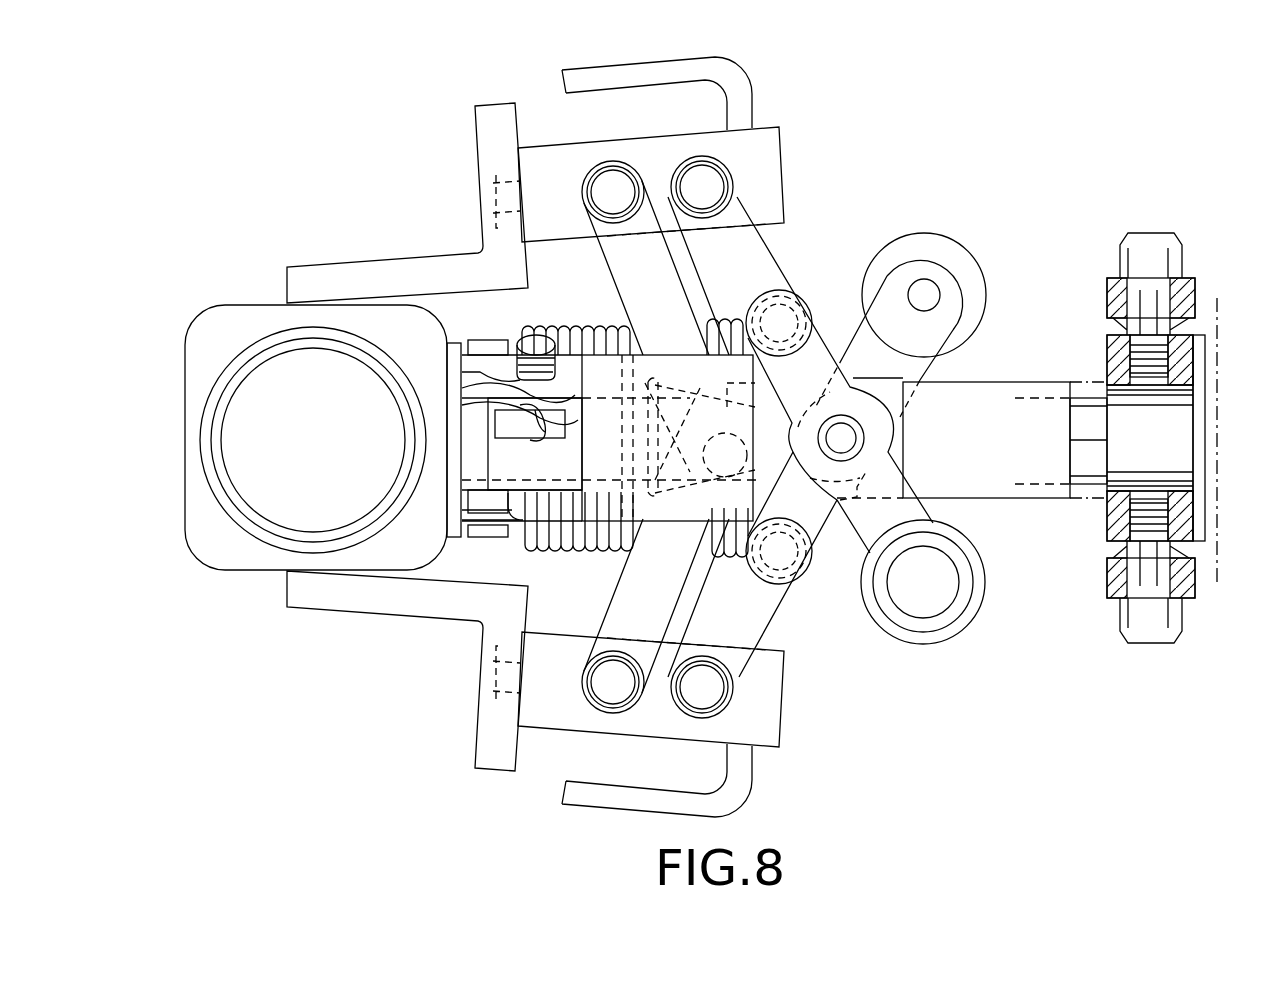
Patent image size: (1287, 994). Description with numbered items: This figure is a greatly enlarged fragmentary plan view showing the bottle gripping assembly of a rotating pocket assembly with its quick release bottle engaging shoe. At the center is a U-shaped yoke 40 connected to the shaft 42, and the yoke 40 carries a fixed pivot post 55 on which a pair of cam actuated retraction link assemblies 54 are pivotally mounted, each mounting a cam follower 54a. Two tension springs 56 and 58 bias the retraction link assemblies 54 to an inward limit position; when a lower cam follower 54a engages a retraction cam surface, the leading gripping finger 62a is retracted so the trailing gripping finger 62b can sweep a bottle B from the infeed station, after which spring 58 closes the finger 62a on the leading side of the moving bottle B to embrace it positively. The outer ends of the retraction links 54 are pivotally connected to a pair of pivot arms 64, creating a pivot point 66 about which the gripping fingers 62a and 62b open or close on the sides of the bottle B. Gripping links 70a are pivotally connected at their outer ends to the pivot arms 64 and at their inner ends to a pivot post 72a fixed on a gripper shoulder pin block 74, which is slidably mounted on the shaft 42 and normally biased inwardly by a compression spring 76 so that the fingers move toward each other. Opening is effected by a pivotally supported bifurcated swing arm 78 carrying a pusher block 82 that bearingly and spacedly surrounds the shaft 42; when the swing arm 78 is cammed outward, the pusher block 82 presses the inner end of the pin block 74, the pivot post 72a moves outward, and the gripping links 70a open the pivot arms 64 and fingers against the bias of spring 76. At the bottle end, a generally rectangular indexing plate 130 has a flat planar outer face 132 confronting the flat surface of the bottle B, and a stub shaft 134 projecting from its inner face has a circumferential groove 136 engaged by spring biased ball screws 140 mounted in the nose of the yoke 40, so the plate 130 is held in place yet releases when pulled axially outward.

The bottle B is at (232, 572).
The yoke 40 is at (688, 363).
The shaft 42 is at (1083, 470).
The retraction link assembly 54 is at (880, 310).
The cam follower 54a is at (967, 247).
The fixed pivot post 55 is at (852, 442).
The tension spring 56 is at (565, 322).
The tension spring 58 is at (577, 557).
The leading gripping finger 62a is at (493, 763).
The trailing gripping finger 62b is at (495, 105).
The pivot arm 64 is at (774, 153).
The pivot point 66 is at (703, 185).
The gripping link 70a is at (664, 282).
The upper pivot post 72a is at (665, 465).
The gripper shoulder pin block 74 is at (1000, 393).
The compression spring 76 is at (660, 520).
The bifurcated swing arm 78 is at (1110, 600).
The pusher block 82 is at (1110, 355).
The plate 130 is at (447, 370).
The outer face 132 is at (470, 420).
The stub shaft 134 is at (495, 423).
The groove 136 is at (503, 442).
The spring biased ball screw 140 is at (517, 342).